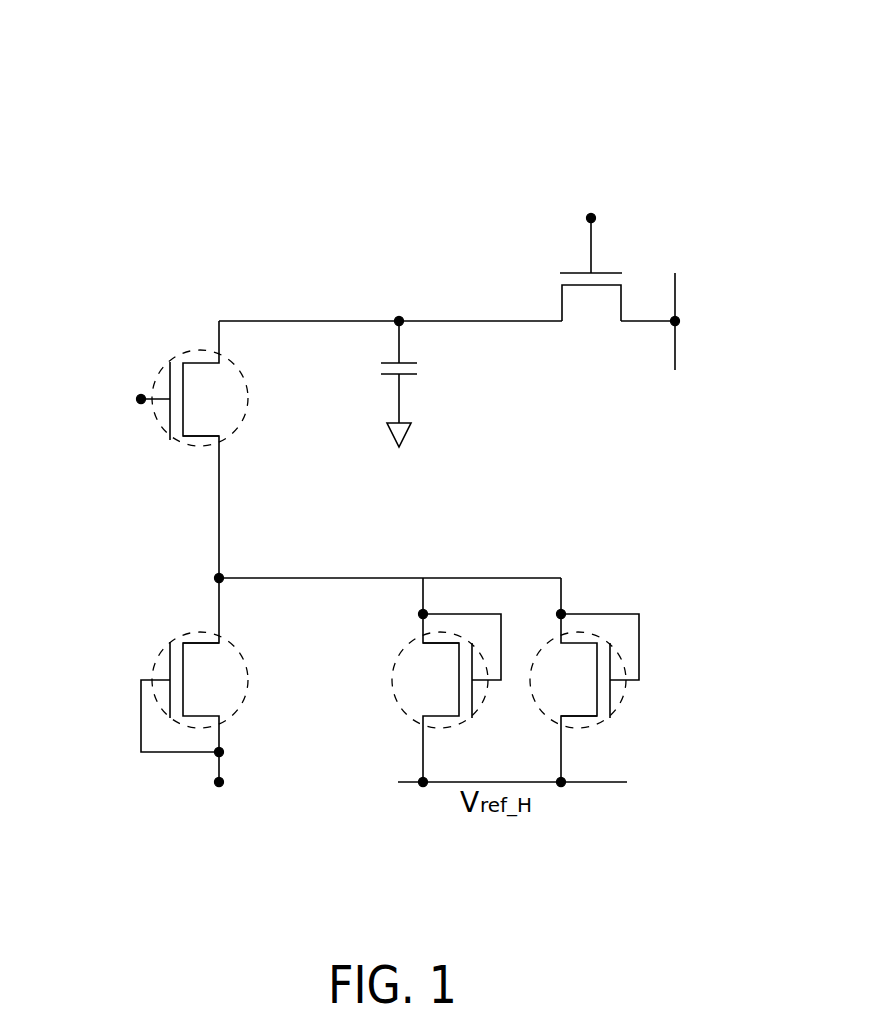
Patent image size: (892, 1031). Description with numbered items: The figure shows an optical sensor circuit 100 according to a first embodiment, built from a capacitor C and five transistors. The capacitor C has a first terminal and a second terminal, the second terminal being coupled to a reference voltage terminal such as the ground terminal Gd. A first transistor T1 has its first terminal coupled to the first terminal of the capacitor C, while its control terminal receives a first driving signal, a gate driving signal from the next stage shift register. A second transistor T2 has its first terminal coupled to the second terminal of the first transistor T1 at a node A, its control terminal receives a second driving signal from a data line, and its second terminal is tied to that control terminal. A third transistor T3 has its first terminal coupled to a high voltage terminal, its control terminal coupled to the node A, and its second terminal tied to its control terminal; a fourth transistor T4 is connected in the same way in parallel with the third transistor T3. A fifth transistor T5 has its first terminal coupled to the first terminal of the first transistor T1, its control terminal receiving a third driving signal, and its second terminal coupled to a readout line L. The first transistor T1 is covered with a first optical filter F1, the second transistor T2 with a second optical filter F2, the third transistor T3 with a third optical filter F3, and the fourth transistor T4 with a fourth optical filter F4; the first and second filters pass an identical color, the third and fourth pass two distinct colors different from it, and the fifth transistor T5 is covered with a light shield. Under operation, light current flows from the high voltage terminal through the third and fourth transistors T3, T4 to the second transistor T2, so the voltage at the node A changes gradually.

The optical sensor circuit 100 is at (714, 92).
The first transistor T1 is at (146, 398).
The second transistor T2 is at (200, 727).
The third transistor T3 is at (446, 682).
The fourth transistor T4 is at (584, 682).
The fifth transistor T5 is at (591, 268).
The capacitor C is at (414, 370).
The first optical filter F1 is at (192, 445).
The second optical filter F2 is at (162, 662).
The third optical filter F3 is at (400, 662).
The fourth optical filter F4 is at (617, 710).
The node A is at (206, 575).
The readout line L is at (677, 339).
The ground terminal Gd is at (419, 438).